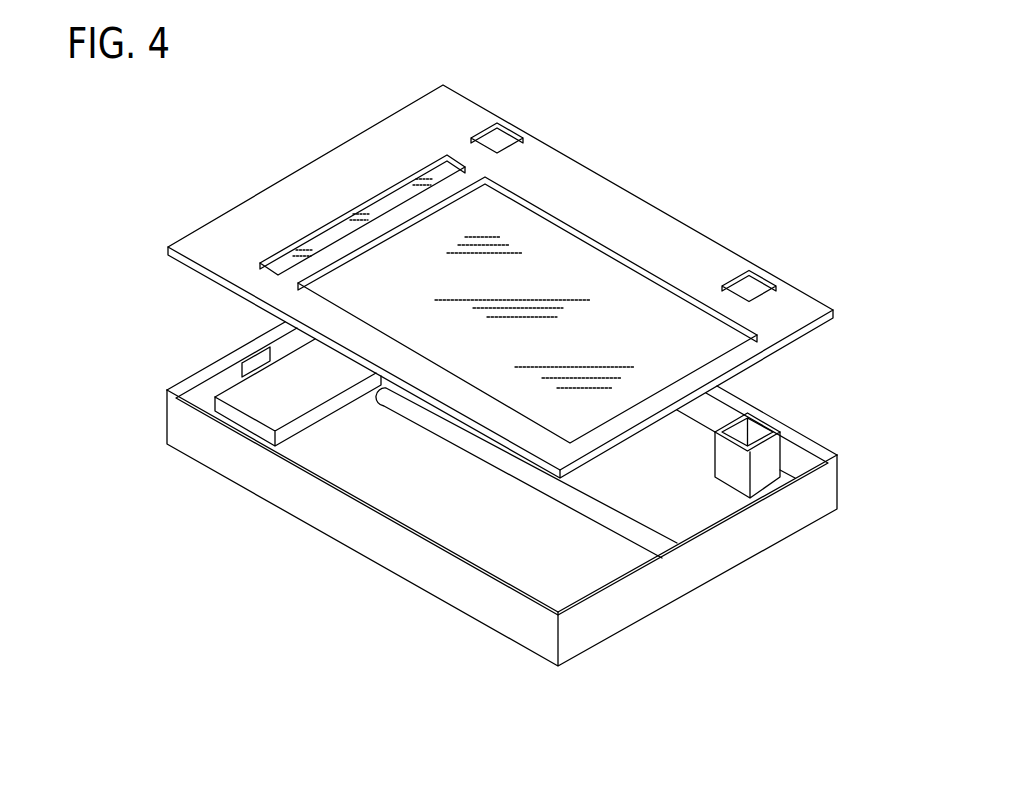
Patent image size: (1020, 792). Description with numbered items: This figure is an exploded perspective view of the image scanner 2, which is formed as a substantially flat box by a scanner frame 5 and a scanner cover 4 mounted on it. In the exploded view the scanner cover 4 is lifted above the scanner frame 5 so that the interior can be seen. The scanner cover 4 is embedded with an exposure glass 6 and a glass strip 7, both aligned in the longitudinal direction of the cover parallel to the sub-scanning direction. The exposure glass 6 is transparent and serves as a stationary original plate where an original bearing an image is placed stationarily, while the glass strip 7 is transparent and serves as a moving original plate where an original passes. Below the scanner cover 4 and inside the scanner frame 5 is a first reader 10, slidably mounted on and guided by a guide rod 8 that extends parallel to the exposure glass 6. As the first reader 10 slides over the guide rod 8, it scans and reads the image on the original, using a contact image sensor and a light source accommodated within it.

The image scanner 2 is at (604, 111).
The scanner cover 4 is at (672, 229).
The scanner frame 5 is at (712, 566).
The exposure glass 6 is at (553, 236).
The glass strip 7 is at (392, 198).
The guide rod 8 is at (620, 524).
The first reader 10 is at (257, 405).